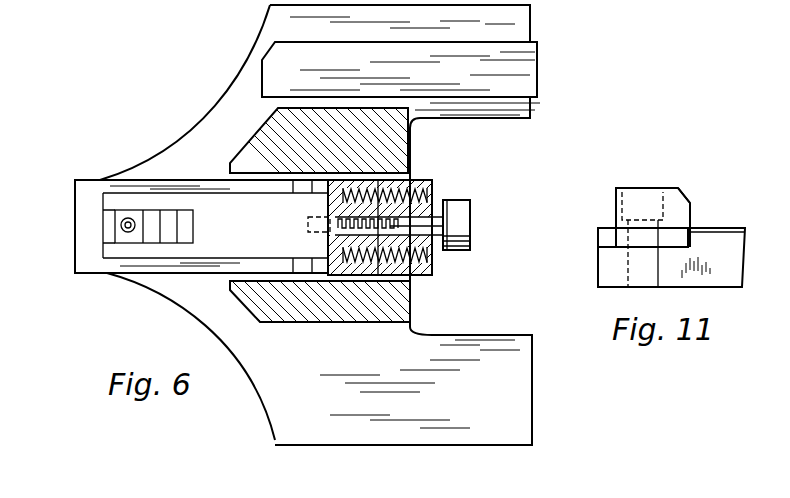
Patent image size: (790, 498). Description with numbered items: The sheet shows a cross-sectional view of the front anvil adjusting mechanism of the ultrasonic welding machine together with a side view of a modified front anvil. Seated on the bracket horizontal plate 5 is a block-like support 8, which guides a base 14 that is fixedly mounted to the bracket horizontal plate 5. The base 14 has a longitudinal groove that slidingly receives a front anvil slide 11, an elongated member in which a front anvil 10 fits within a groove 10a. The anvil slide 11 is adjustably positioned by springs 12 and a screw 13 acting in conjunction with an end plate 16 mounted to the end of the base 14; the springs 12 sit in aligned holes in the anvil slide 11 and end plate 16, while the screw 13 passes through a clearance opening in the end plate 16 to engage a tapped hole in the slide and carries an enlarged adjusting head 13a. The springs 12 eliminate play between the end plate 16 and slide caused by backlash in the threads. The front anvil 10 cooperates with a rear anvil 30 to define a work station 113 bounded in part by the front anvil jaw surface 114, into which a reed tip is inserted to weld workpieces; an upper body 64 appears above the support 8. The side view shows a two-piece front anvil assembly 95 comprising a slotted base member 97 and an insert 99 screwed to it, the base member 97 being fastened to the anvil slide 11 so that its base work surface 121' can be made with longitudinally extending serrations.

In FIG. 6, the upper body block 64 is at (502, 72).
In FIG. 6, the block-like support 8 is at (413, 143).
In FIG. 6, the front anvil 10 is at (112, 222).
In FIG. 6, the groove 10a is at (126, 232).
In FIG. 6, the rear anvil 30 is at (207, 222).
In FIG. 6, the work station 113 is at (170, 212).
In FIG. 6, the base 14 is at (144, 265).
In FIG. 6, the front anvil slide 11 is at (333, 242).
In FIG. 6, the end plate 16 is at (422, 277).
In FIG. 6, the springs 12 is at (432, 197).
In FIG. 6, the screw 13 is at (447, 227).
In FIG. 6, the enlarged adjusting head 13a is at (445, 233).
In FIG. 6, the bracket horizontal plate 5 is at (452, 342).
In FIG. 11, the two-piece front anvil assembly 95 is at (707, 212).
In FIG. 11, the insert 99 is at (675, 188).
In FIG. 11, the front anvil jaw surface 114 is at (692, 201).
In FIG. 11, the base work surface 121' is at (725, 214).
In FIG. 11, the slotted base member 97 is at (715, 270).